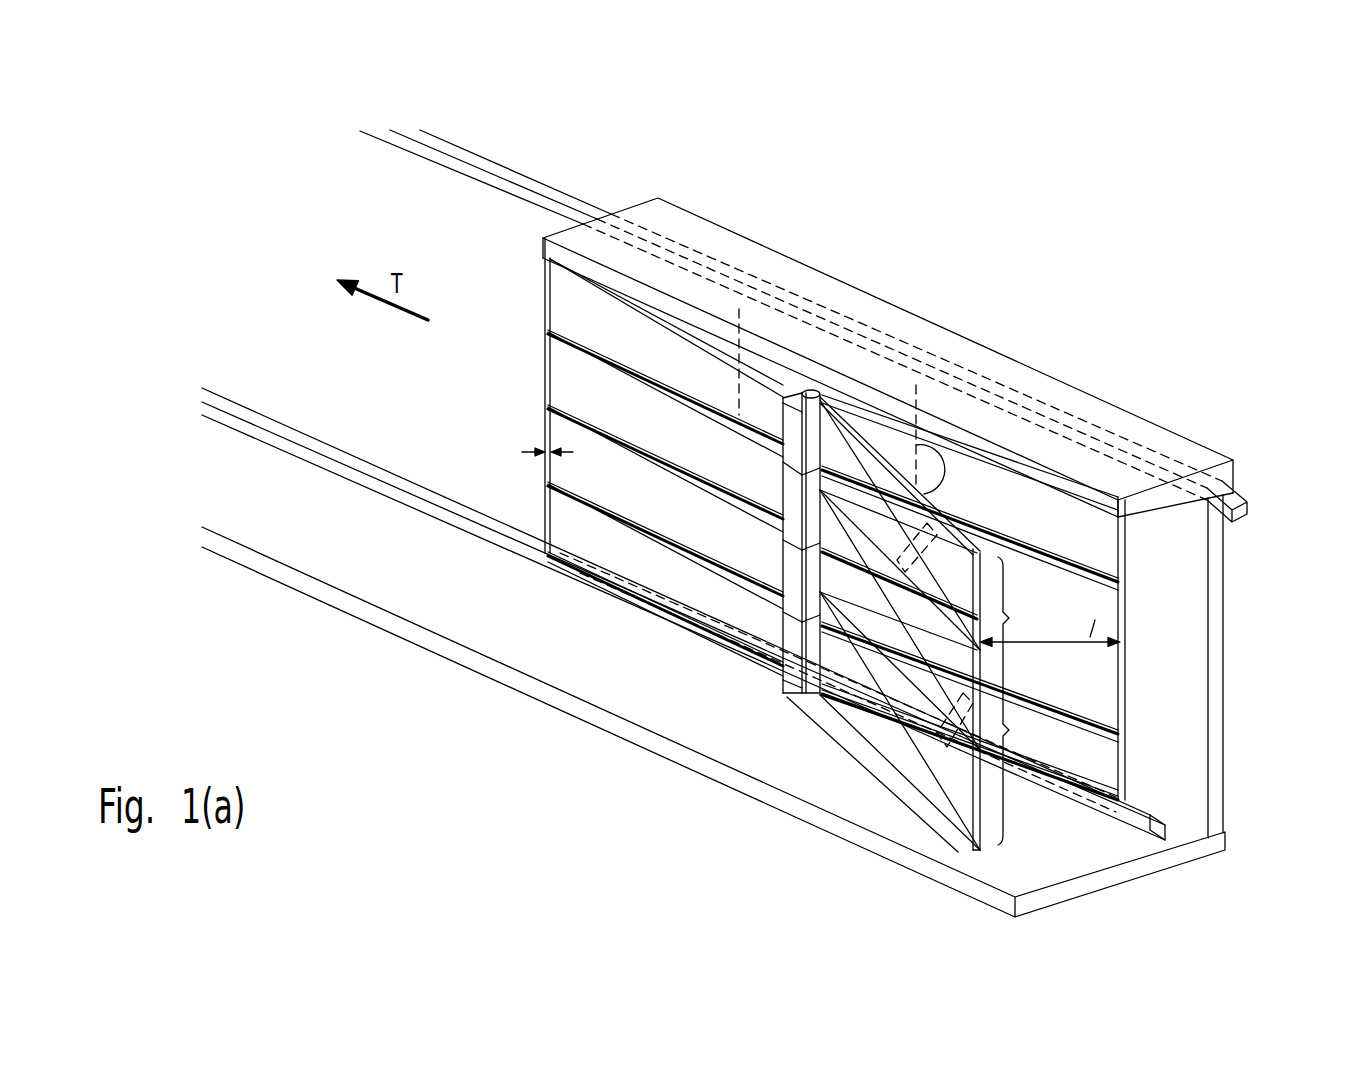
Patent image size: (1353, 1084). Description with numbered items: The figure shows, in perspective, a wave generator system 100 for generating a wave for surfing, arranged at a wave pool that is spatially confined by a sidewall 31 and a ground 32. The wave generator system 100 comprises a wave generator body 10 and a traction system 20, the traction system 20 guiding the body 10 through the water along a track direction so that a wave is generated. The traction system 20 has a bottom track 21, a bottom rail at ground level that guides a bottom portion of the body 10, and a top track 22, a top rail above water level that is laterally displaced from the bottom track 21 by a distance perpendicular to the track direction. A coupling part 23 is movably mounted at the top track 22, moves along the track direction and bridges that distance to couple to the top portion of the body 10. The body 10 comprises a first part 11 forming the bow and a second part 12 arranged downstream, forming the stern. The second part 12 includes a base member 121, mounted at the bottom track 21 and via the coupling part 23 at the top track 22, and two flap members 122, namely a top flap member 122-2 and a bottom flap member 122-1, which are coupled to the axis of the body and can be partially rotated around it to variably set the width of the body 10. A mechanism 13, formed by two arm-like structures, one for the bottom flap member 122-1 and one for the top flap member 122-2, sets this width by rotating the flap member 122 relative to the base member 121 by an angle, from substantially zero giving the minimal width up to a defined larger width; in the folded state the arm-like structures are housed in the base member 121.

The wave generator body 10 is at (507, 292).
The first part 11 is at (541, 556).
The second part 12 is at (957, 858).
The mechanism 13 is at (955, 562).
The traction system 20 is at (350, 91).
The bottom track 21 is at (1157, 833).
The top track 22 is at (1240, 511).
The coupling part 23 is at (1145, 432).
The sidewall 31 is at (1237, 658).
The ground 32 is at (1120, 868).
The wave generator system 100 is at (803, 393).
The base member 121 is at (1139, 768).
The flap member 122 is at (1040, 861).
The bottom flap member 122-1 is at (927, 671).
The top flap member 122-2 is at (943, 523).